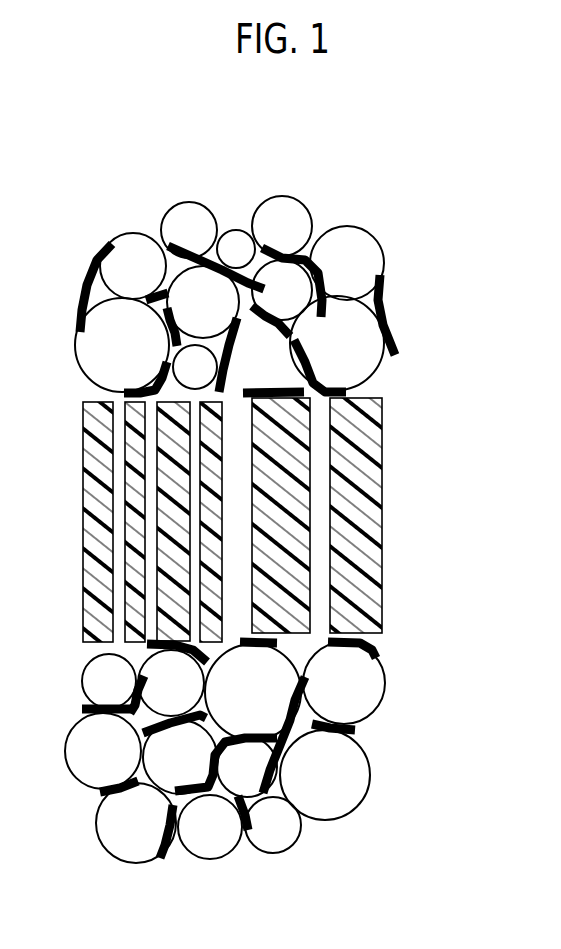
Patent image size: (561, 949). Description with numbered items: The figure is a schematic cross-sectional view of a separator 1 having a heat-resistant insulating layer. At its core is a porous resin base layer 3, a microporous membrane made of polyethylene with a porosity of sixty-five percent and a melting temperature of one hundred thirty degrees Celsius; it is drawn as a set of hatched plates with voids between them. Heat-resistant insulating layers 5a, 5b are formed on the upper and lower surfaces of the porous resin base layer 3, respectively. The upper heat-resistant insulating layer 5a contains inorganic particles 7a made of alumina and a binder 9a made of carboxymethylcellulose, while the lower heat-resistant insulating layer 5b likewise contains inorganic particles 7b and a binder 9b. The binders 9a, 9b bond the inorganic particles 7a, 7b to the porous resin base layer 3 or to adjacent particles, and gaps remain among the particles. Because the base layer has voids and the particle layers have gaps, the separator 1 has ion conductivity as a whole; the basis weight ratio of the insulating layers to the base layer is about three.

The separator having a heat-resistant insulating layer 1 is at (70, 190).
The porous resin base layer 3 is at (368, 463).
The heat-resistant insulating layer 5a is at (465, 230).
The inorganic particles 7a is at (380, 253).
The binder 9a is at (380, 320).
The heat-resistant insulating layer 5b is at (468, 652).
The inorganic particles 7b is at (383, 672).
The binder 9b is at (370, 733).